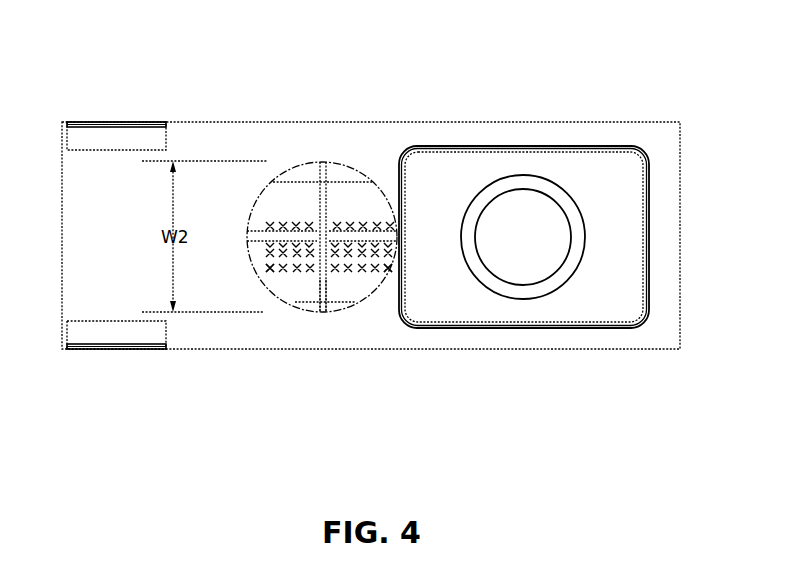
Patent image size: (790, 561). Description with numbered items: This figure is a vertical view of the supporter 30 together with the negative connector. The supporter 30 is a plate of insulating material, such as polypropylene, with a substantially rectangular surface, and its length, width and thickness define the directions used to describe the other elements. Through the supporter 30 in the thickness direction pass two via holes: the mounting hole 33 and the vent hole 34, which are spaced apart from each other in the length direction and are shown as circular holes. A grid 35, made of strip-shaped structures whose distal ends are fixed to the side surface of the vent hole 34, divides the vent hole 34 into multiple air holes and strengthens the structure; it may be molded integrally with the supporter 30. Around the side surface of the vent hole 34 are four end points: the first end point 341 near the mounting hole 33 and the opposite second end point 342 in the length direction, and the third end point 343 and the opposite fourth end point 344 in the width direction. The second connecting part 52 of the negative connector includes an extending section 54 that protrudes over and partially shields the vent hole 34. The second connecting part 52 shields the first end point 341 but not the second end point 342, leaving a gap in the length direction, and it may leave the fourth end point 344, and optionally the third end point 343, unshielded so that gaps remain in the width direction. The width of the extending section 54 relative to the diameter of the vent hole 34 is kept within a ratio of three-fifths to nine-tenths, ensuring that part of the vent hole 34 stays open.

The supporter 30 is at (205, 143).
The mounting hole 33 is at (519, 236).
The vent hole 34 is at (341, 191).
The fourth end point 344 is at (321, 162).
The third end point 343 is at (323, 312).
The second end point 342 is at (247, 236).
The first end point 341 is at (397, 242).
The grid 35 is at (286, 227).
The second connecting part 52 is at (300, 288).
The extending section 54 is at (329, 268).